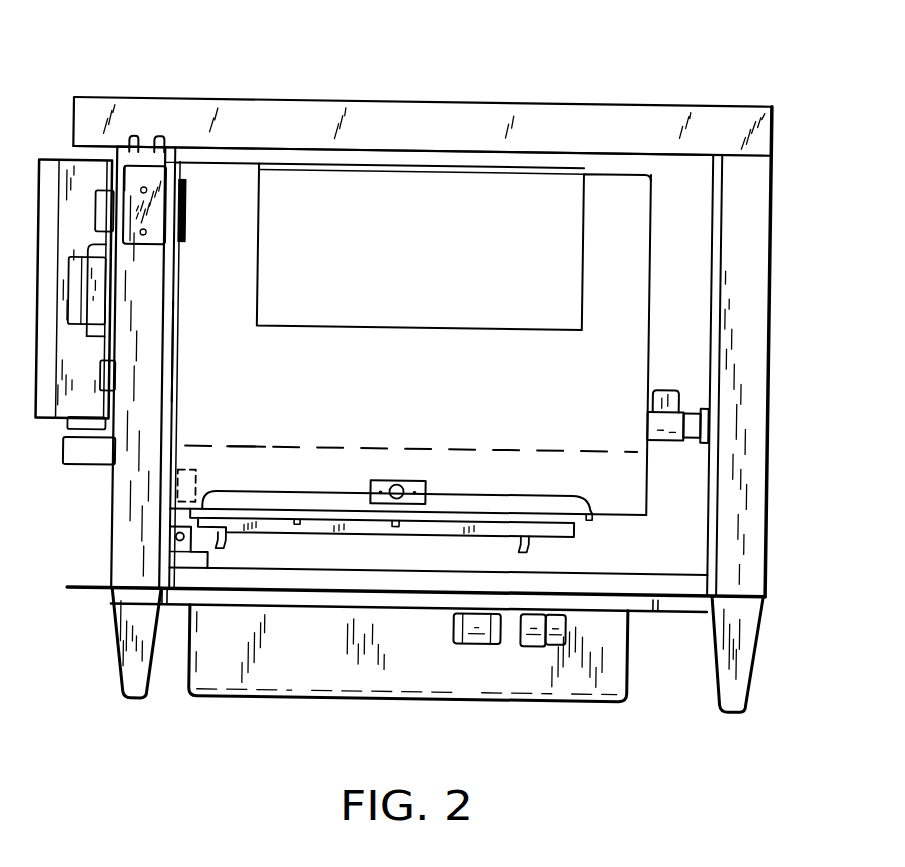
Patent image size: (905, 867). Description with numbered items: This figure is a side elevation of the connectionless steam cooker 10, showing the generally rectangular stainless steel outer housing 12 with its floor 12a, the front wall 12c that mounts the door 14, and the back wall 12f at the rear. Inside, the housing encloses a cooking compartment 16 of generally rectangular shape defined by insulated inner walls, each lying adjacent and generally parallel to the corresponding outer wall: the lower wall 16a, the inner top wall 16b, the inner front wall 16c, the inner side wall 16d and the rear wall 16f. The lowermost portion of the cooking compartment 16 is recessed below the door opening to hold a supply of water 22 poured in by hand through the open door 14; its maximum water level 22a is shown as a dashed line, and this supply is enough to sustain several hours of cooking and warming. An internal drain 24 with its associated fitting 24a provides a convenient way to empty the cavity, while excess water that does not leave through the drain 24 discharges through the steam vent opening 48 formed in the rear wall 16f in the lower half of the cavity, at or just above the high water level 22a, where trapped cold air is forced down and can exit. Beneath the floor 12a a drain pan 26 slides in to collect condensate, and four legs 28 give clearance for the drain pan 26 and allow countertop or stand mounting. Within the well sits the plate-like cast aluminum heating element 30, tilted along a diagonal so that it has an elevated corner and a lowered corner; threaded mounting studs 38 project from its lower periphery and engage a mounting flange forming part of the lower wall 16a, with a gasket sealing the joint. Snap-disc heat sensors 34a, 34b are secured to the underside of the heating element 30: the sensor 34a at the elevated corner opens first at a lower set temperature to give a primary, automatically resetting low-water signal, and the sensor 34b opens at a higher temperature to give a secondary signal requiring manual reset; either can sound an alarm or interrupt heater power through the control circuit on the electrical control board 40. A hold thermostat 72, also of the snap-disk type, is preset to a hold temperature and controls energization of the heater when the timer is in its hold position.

The connectionless steam cooker 10 is at (420, 303).
The outer housing 12 is at (419, 347).
The floor 12a is at (327, 574).
The front wall 12c is at (131, 497).
The back wall 12f is at (757, 222).
The door 14 is at (51, 160).
The cooking compartment 16 is at (426, 406).
The lower wall 16a is at (631, 507).
The inner top wall 16b is at (616, 158).
The inner front wall 16c is at (177, 350).
The inner side wall 16d is at (228, 263).
The rear wall of the cooking compartment 16f is at (648, 320).
The supply of water 22 is at (637, 460).
The maximum water level 22a is at (250, 443).
The internal drain 24 is at (179, 534).
The hinge pin 24a is at (202, 480).
The drain pan 26 is at (638, 652).
The legs 28 is at (138, 646).
The heating element 30 is at (494, 488).
The heat sensor 34a is at (538, 541).
The heat sensor 34b is at (234, 538).
The threaded mounting studs 38 is at (406, 521).
The electrical control board 40 is at (434, 244).
The steam vent opening 48 is at (655, 420).
The hold thermostat 72 is at (408, 482).